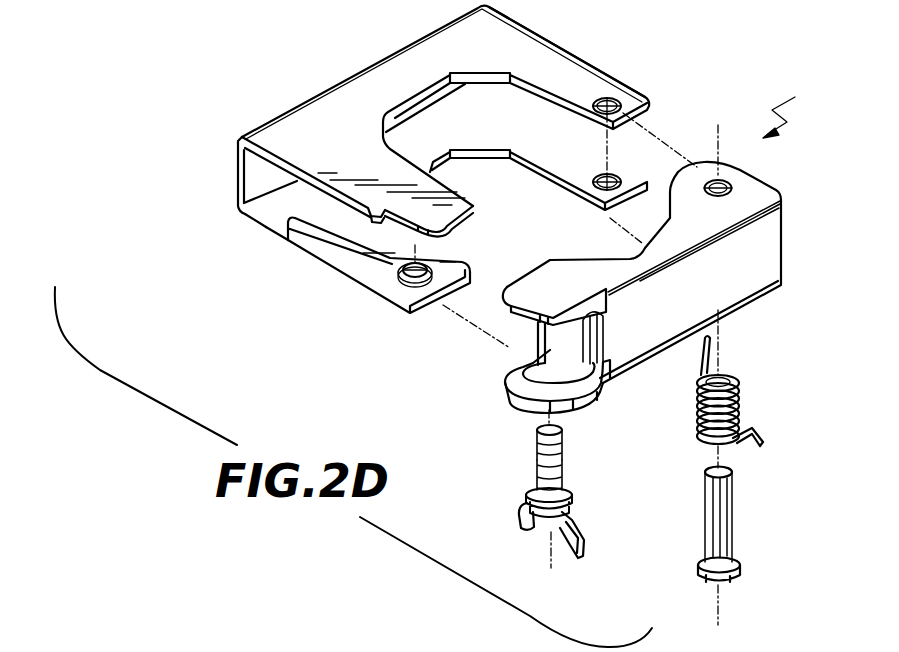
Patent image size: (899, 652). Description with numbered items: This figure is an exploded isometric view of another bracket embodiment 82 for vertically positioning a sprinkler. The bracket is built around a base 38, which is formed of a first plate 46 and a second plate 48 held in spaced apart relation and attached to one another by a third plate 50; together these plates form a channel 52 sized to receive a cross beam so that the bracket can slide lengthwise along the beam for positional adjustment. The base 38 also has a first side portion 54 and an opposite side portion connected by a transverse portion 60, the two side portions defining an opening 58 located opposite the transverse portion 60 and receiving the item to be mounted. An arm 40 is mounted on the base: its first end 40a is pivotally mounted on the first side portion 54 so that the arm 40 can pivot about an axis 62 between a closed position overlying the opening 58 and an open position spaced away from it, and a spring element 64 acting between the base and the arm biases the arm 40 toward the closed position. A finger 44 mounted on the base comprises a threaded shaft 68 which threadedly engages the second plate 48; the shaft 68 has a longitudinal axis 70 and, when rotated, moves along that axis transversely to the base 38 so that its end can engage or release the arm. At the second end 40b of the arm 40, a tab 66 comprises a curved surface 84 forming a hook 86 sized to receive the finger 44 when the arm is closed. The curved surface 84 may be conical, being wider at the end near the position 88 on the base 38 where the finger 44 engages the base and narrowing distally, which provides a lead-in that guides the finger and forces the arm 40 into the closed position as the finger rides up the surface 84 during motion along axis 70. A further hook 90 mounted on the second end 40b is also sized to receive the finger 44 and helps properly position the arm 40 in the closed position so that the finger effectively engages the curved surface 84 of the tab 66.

The base 38 is at (282, 115).
The transverse portion 60 is at (340, 110).
The first plate 46 is at (565, 50).
The first side portion 54 is at (593, 62).
The bracket embodiment 82 is at (799, 106).
The first end of arm 40a is at (770, 235).
The arm 40 is at (767, 256).
The third plate 50 is at (237, 180).
The channel 52 is at (250, 210).
The second plate 48 is at (270, 232).
The position 88 is at (456, 262).
The opening 58 is at (520, 218).
The hook 86 is at (537, 340).
The tab 66 is at (515, 358).
The curved surface 84 is at (586, 312).
The threaded shaft 68 is at (538, 442).
The hook 90 is at (585, 397).
The second end of arm 40b is at (607, 345).
The finger 44 is at (570, 473).
The longitudinal axis 70 is at (552, 570).
The spring element 64 is at (735, 400).
The axis 62 is at (718, 603).